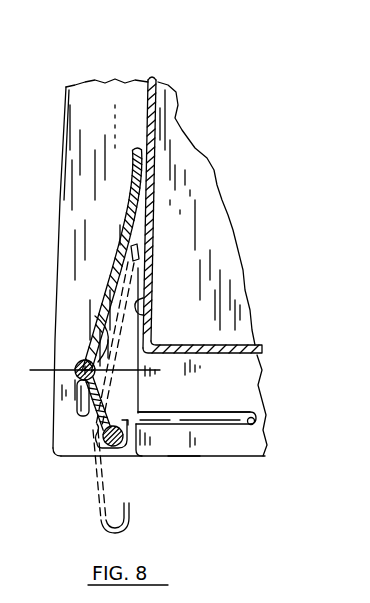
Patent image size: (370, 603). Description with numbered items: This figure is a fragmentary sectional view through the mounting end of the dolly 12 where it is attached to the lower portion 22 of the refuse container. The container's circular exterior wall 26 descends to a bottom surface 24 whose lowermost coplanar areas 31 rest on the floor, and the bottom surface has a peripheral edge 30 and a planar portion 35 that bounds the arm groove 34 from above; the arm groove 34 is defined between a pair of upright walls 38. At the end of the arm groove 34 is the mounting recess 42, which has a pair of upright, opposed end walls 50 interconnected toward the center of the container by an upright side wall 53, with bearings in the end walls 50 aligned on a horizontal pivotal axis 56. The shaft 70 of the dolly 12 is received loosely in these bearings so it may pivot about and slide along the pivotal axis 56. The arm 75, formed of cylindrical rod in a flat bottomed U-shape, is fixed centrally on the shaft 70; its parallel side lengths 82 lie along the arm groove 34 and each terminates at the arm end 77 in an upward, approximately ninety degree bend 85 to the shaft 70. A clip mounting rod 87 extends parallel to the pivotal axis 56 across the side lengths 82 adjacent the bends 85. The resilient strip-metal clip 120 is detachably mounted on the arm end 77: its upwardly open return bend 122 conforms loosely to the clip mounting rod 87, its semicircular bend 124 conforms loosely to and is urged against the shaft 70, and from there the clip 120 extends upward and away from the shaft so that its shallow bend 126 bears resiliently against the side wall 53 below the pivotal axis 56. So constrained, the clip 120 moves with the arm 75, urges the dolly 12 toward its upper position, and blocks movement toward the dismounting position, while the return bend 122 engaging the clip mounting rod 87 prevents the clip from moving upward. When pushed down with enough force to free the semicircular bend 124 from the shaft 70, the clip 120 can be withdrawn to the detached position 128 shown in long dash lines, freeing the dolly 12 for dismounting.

The lower portion 22 is at (96, 76).
The exterior wall 26 is at (64, 123).
The shallow bend 126 is at (141, 183).
The resilient clip 120 is at (126, 218).
The side wall 53 is at (142, 304).
The semicircular bend 124 is at (96, 317).
The shaft 70 is at (75, 362).
The clip mounting rod 87 is at (127, 420).
The upright walls 38 is at (221, 399).
The planar portion 35 is at (253, 358).
The arm groove 34 is at (247, 398).
The dolly 12 is at (274, 426).
The pivotal axis 56 is at (50, 371).
The bend 85 is at (82, 412).
The mounting recess 42 is at (68, 419).
The end walls 50 is at (82, 453).
The arm end 77 is at (83, 418).
The peripheral edge 30 is at (52, 455).
The return bend 122 is at (123, 444).
The arm 75 is at (242, 433).
The side lengths 82 is at (212, 424).
The bottom surface 24 is at (200, 461).
The coplanar areas 31 is at (190, 462).
The detached position 128 is at (98, 518).